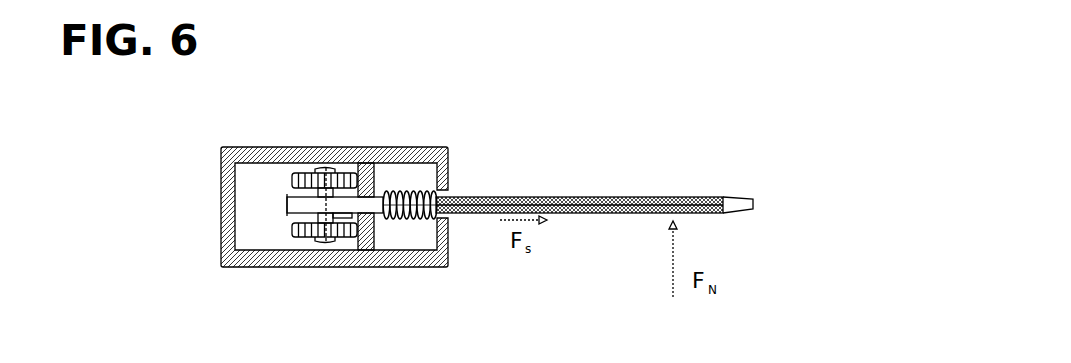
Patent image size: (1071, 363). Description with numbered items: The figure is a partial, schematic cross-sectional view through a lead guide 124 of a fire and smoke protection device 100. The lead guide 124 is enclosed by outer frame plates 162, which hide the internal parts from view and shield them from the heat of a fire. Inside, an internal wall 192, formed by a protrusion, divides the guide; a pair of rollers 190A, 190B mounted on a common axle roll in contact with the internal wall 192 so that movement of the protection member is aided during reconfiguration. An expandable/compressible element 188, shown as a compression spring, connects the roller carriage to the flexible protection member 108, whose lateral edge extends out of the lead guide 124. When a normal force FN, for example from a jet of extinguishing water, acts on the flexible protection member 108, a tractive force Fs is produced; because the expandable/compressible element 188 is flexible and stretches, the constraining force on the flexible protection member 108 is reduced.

The device 100 is at (200, 141).
The lead guide 124 is at (222, 267).
The outer frame plate 162 is at (438, 146).
The internal wall 192 is at (373, 183).
The roller 190A is at (301, 172).
The roller 190B is at (307, 238).
The expandable/compressible element 188 is at (420, 192).
The flexible protection member 108 is at (586, 197).